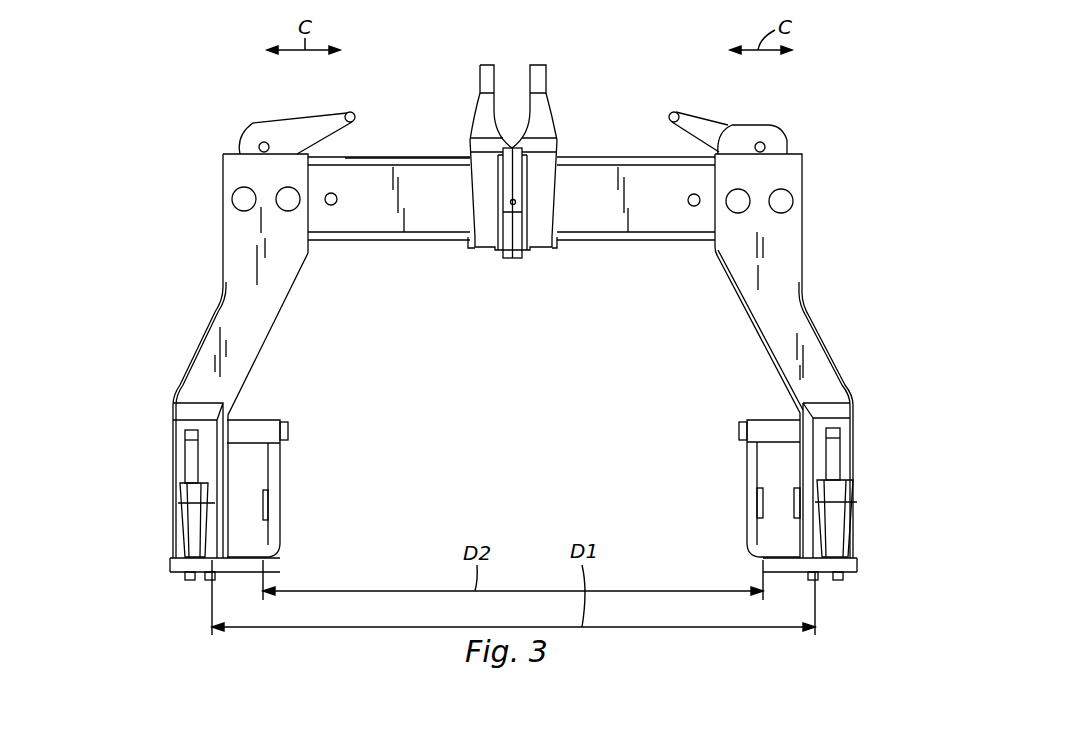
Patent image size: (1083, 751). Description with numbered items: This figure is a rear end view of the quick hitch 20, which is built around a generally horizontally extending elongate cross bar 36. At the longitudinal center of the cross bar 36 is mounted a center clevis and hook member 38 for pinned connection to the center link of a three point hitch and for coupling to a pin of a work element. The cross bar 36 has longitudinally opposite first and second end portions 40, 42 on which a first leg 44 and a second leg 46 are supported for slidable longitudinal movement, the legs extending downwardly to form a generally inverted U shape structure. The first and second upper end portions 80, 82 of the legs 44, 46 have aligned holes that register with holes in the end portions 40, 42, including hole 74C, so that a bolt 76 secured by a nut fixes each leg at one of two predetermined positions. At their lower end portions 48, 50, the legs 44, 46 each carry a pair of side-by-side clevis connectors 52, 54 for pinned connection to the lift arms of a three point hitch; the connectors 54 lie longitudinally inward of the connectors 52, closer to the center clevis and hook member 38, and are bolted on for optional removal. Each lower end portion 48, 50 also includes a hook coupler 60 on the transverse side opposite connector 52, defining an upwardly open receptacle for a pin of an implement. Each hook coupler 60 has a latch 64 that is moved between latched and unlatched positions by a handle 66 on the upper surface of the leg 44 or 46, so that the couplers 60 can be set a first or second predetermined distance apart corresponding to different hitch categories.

The quick hitch 20 is at (830, 98).
The cross bar 36 is at (415, 160).
The center clevis and hook member 38 is at (552, 120).
The first end portion 40 is at (345, 158).
The second end portion 42 is at (687, 160).
The first leg 44 is at (223, 292).
The second leg 46 is at (818, 330).
The lower end portion 48 is at (170, 530).
The lower end portion 50 is at (855, 540).
The connector 52 is at (180, 505).
The connector 54 is at (280, 540).
The hook coupler 60 is at (175, 575).
The latch 64 is at (185, 452).
The handle 66 is at (311, 120).
The hole 74C is at (331, 207).
The bolt 76 is at (282, 206).
The first upper end portion 80 is at (223, 160).
The second upper end portion 82 is at (804, 212).